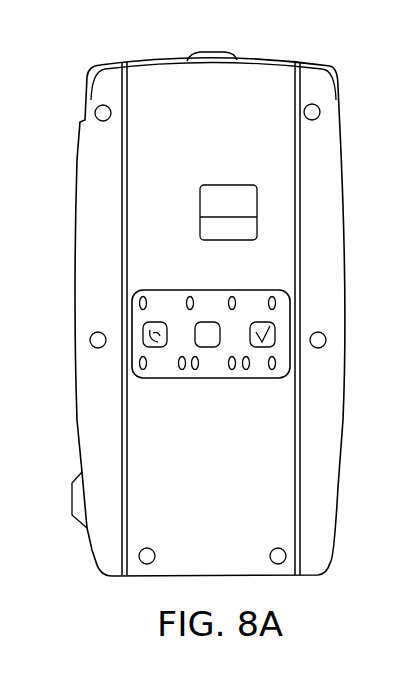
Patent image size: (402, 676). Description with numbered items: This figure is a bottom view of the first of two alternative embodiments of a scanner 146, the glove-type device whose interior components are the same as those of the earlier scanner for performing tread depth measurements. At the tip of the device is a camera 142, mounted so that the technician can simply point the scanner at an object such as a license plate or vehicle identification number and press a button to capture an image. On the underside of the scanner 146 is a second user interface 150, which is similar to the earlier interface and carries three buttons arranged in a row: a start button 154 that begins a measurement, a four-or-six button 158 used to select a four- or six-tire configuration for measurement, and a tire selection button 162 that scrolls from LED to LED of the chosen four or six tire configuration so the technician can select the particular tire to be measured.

The camera 142 is at (218, 50).
The scanner 146 is at (75, 242).
The second user interface 150 is at (136, 314).
The start button 154 is at (263, 347).
The 4/6 button 158 is at (212, 347).
The tire selection button 162 is at (157, 347).